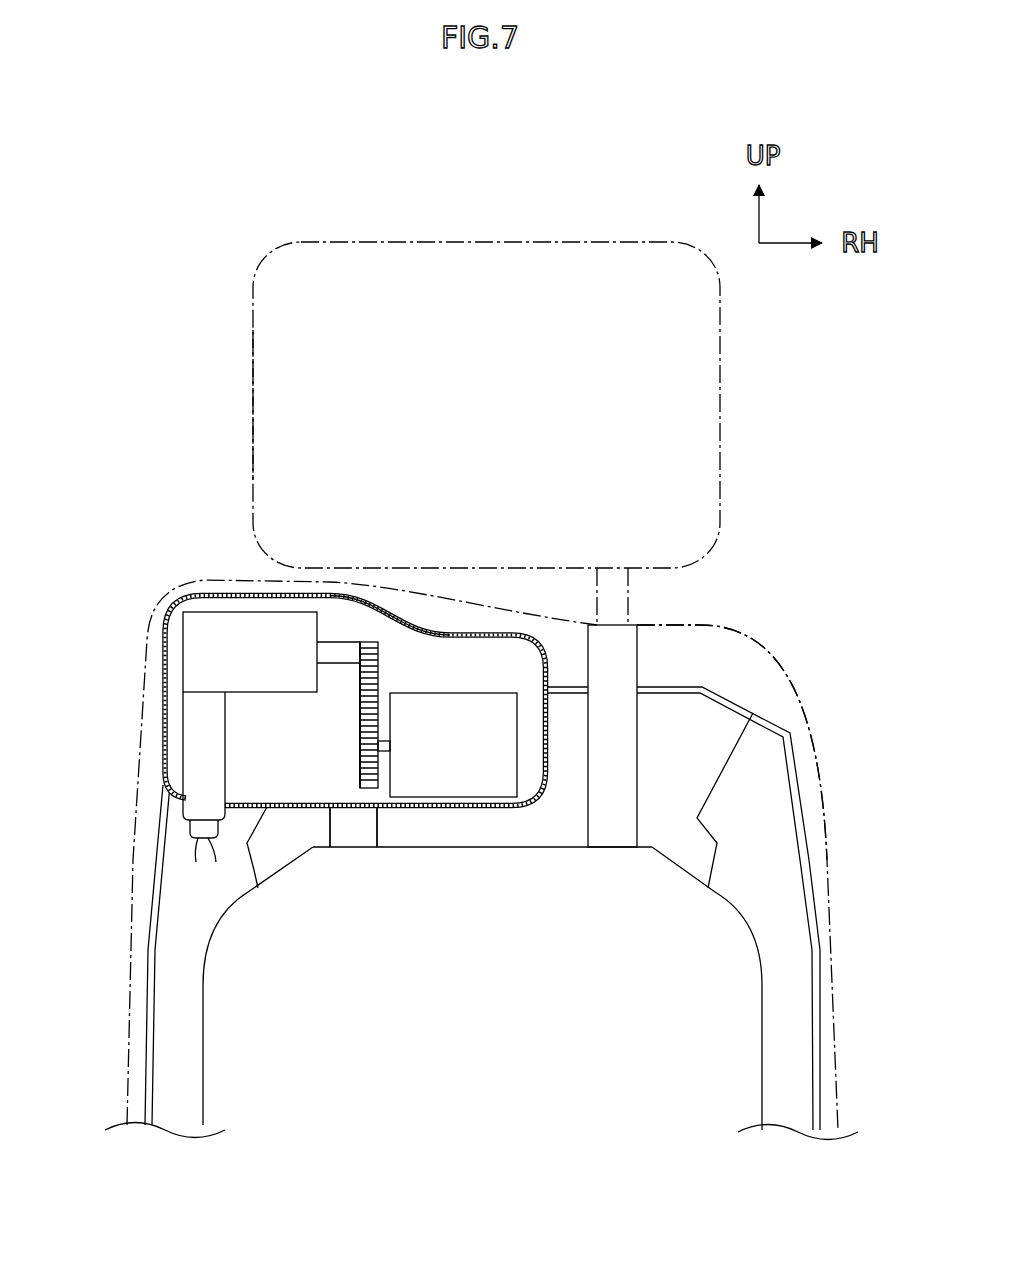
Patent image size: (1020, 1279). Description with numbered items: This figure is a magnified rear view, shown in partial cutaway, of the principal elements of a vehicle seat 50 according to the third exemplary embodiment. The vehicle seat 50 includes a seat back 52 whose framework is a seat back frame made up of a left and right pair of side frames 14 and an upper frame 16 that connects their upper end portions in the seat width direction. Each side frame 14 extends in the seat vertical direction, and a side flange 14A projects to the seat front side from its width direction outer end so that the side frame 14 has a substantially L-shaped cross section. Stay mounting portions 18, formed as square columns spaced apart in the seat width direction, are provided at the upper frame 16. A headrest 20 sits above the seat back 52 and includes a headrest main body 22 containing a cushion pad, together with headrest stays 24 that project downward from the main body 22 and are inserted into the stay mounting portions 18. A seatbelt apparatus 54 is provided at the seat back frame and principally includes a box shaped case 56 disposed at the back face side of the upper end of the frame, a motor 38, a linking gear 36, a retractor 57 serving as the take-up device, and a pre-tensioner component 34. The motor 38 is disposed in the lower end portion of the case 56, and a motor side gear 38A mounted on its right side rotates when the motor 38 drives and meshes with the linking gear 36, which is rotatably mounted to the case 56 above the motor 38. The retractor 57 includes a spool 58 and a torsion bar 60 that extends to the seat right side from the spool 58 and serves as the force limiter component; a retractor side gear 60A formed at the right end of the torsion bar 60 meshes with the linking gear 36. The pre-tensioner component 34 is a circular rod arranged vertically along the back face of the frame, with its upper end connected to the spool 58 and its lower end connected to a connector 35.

The side frame 14 is at (208, 1070).
The side flange 14A is at (148, 1040).
The upper frame 16 is at (495, 852).
The stay mounting portion 18 is at (638, 660).
The headrest 20 is at (240, 280).
The headrest main body 22 is at (252, 408).
The headrest stay 24 is at (630, 592).
The pre-tensioner component 34 is at (180, 756).
The connector 35 is at (186, 832).
The linking gear 36 is at (380, 683).
The motor 38 is at (445, 802).
The motor side gear 38A is at (363, 810).
The vehicle seat 50 is at (818, 527).
The seat back 52 is at (733, 578).
The seatbelt apparatus 54 is at (289, 688).
The case 56 is at (206, 592).
The retractor 57 is at (275, 606).
The spool 58 is at (180, 665).
The torsion bar 60 is at (338, 636).
The retractor side gear 60A is at (367, 644).